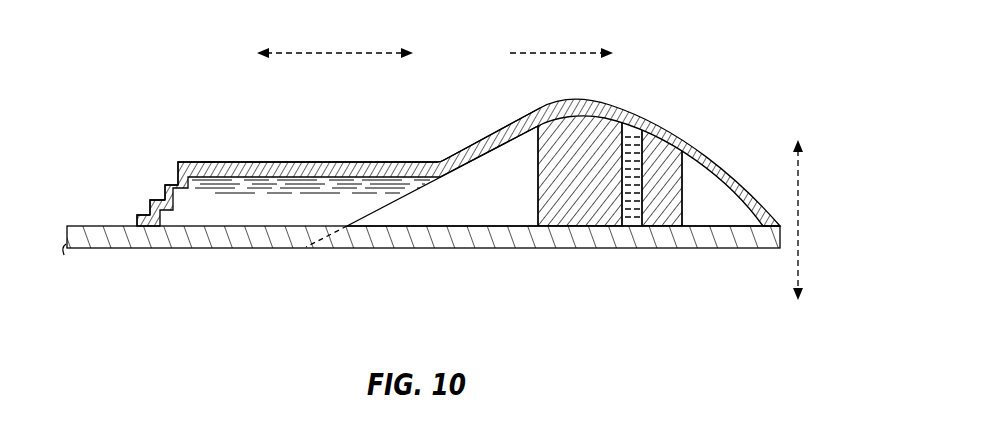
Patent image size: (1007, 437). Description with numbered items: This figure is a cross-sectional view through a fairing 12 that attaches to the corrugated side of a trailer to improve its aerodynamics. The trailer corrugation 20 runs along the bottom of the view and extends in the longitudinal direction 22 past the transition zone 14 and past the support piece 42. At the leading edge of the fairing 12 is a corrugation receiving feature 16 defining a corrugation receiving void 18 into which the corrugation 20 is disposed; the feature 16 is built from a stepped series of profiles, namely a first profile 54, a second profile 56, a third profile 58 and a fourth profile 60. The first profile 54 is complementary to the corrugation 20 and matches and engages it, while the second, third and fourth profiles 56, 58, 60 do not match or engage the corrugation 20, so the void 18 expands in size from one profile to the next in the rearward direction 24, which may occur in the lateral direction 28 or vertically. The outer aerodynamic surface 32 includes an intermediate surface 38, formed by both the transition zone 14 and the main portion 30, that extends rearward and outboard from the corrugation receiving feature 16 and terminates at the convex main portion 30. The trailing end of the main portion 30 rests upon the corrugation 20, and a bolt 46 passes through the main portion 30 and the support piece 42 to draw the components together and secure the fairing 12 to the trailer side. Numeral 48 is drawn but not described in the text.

The fairing 12 is at (668, 128).
The transition zone 14 is at (190, 250).
The corrugation receiving feature 16 is at (330, 162).
The corrugation receiving void 18 is at (270, 212).
The corrugation 20 is at (555, 228).
The longitudinal direction 22 is at (335, 53).
The rearward direction 24 is at (563, 53).
The lateral direction 28 is at (802, 218).
The main portion 30 is at (612, 105).
The aerodynamic surface 32 is at (484, 124).
The intermediate surface 38 is at (450, 158).
The support piece 42 is at (663, 187).
The bolt 46 is at (631, 140).
The top layer corner 48 is at (205, 154).
The first profile 54 is at (138, 222).
The second profile 56 is at (157, 200).
The third profile 58 is at (167, 187).
The fourth profile 60 is at (253, 162).